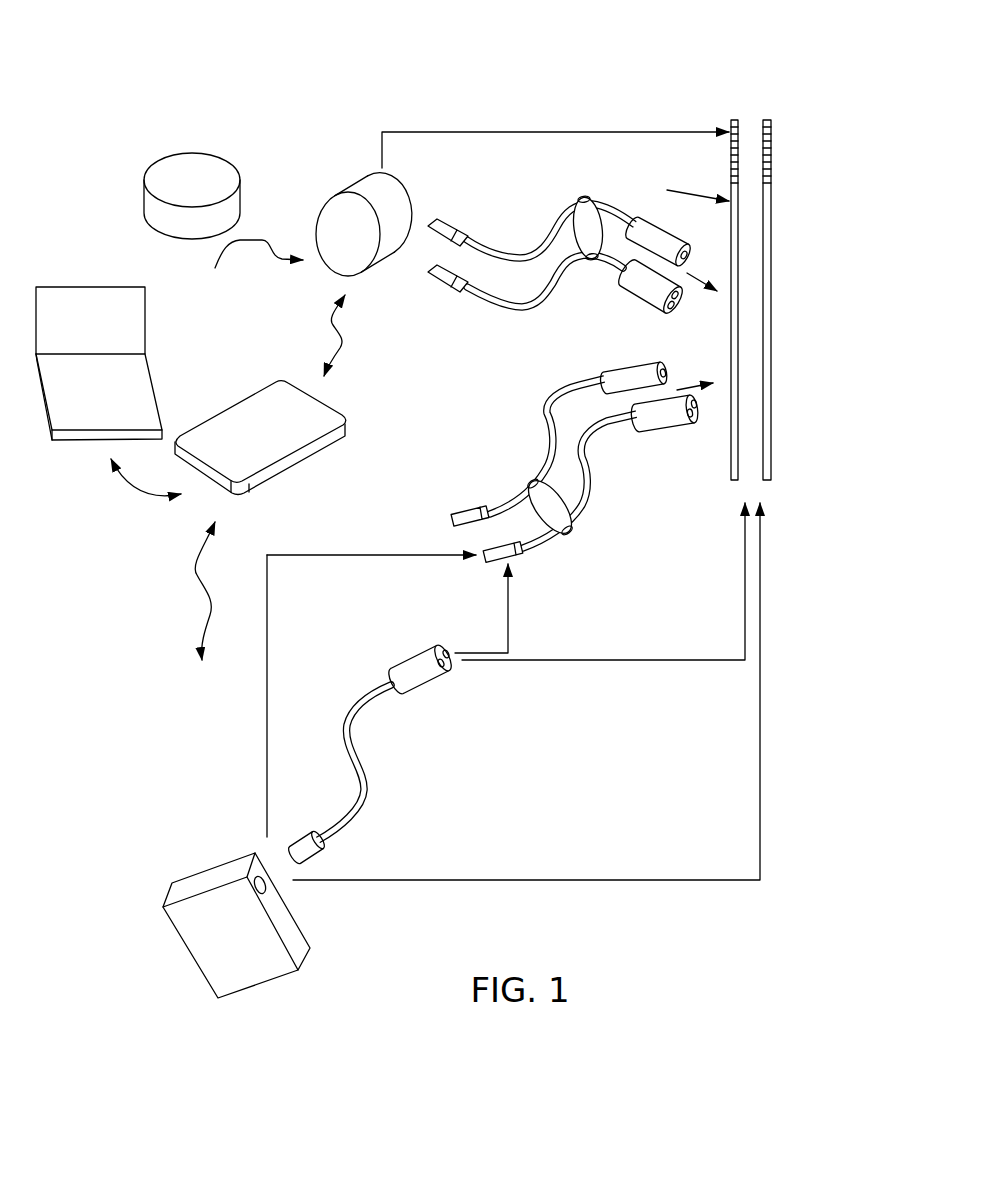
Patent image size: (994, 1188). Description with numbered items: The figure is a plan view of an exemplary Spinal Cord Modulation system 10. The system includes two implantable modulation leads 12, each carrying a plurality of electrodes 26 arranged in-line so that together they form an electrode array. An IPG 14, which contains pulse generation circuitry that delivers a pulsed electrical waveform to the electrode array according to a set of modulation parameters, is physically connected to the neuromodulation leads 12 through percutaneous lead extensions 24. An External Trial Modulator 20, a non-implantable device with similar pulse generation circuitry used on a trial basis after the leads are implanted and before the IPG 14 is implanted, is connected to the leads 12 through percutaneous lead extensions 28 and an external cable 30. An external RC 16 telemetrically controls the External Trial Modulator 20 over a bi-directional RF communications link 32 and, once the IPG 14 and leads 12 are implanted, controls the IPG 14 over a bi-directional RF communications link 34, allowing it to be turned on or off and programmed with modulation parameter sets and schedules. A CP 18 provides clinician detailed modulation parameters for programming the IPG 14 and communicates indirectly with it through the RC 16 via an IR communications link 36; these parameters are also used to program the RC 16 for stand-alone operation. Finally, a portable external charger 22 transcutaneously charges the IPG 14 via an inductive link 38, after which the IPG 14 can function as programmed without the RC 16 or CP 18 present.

The SCM system 10 is at (531, 85).
The implantable modulation leads 12 is at (750, 117).
The IPG 14 is at (345, 190).
The external RC 16 is at (272, 402).
The CP 18 is at (77, 300).
The External Trial Modulator 20 is at (210, 880).
The external charger 22 is at (190, 162).
The percutaneous lead extensions 24 is at (580, 201).
The electrodes 26 is at (771, 183).
The percutaneous lead extensions 28 is at (527, 487).
The external cable 30 is at (364, 697).
The bi-directional RF communications link 32 is at (207, 634).
The bi-directional RF communications link 34 is at (340, 347).
The IR communications link 36 is at (136, 488).
The inductive link 38 is at (245, 260).